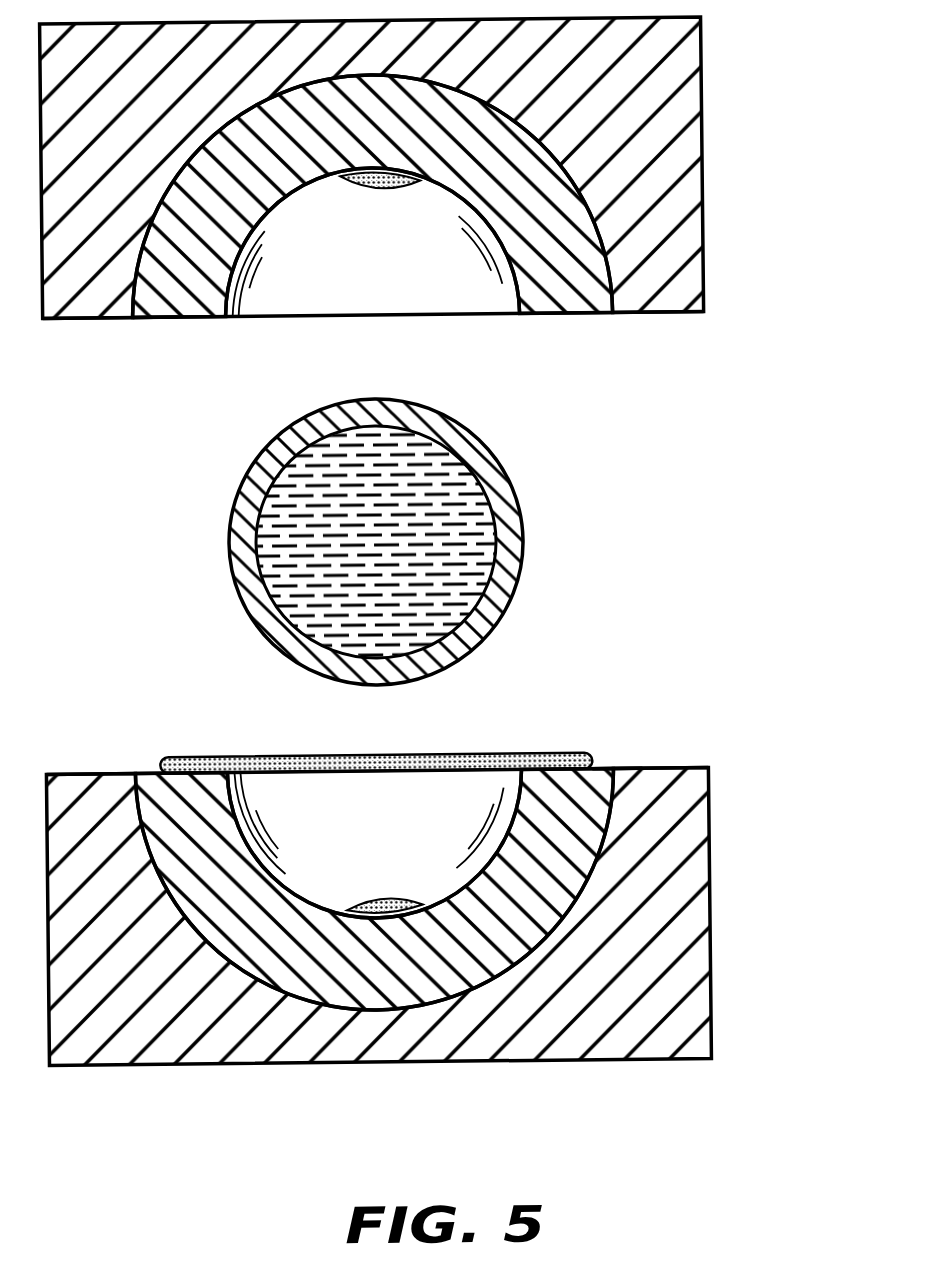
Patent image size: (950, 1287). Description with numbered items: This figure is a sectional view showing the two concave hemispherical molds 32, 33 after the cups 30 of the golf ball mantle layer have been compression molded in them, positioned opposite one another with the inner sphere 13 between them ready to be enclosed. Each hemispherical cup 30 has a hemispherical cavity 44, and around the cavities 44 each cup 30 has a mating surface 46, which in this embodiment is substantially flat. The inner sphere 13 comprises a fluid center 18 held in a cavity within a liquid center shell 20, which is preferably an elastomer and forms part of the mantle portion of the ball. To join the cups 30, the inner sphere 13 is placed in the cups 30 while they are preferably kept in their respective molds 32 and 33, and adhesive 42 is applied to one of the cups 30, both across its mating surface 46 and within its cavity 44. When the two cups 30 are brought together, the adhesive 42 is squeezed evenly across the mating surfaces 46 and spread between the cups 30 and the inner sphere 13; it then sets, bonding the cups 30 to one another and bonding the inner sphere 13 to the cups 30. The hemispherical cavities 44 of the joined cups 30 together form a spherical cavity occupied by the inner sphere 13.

The inner sphere 13 is at (218, 532).
The fluid center 18 is at (490, 529).
The liquid center shell 20 is at (499, 613).
The cup 30 is at (594, 316).
The first hemispherical mold 32 is at (681, 155).
The second hemispherical mold 33 is at (687, 838).
The adhesive 42 is at (402, 192).
The hemispherical cavity 44 is at (303, 274).
The mating surface 46 is at (170, 326).